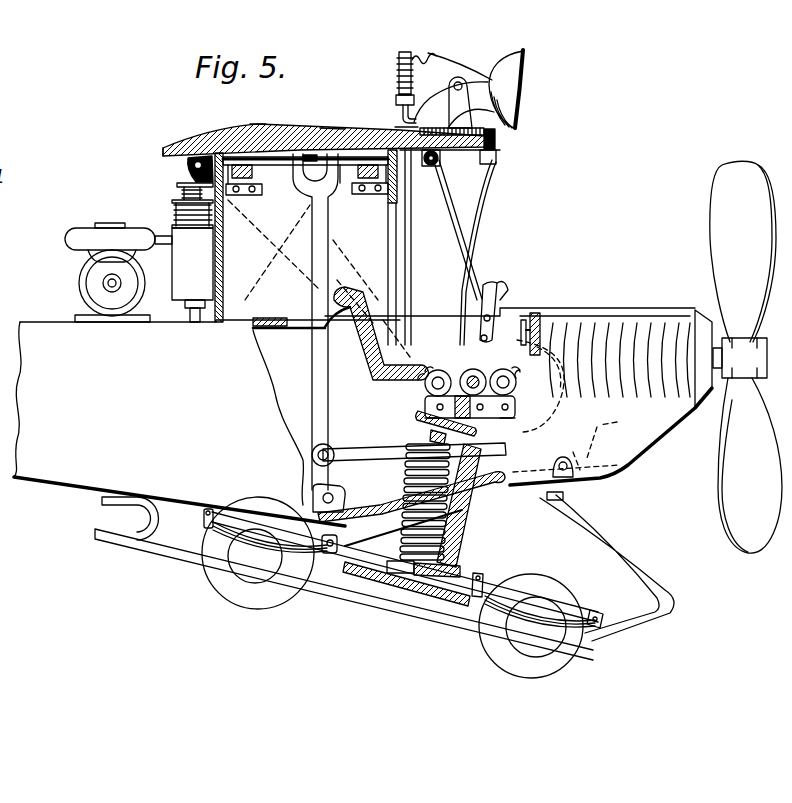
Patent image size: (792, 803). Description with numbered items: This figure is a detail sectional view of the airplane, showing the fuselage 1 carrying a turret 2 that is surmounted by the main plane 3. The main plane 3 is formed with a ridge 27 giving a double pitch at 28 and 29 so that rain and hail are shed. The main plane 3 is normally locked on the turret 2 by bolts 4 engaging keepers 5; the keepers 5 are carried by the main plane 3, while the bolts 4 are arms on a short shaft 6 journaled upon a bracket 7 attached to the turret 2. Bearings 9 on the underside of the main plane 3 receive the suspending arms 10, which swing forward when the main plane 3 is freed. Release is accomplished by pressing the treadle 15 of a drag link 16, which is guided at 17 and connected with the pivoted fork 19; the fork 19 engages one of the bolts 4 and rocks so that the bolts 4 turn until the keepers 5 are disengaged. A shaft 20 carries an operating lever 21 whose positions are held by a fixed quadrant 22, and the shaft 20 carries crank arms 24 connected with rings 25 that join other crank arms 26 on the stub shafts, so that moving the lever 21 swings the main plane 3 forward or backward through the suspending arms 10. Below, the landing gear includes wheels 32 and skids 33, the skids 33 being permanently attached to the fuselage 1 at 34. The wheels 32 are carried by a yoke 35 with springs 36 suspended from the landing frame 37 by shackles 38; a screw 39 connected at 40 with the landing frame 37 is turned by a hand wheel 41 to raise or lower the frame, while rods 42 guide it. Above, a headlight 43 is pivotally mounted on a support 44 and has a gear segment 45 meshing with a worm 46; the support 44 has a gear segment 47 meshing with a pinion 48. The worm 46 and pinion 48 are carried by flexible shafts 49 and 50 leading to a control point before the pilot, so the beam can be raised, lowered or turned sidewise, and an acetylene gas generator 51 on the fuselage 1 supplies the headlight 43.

The fuselage 1 is at (56, 333).
The turret 2 is at (398, 258).
The main plane 3 is at (276, 140).
The bolts 4 is at (280, 166).
The keepers 5 is at (250, 195).
The short shaft 6 is at (189, 167).
The bracket 7 is at (350, 186).
The bearings 9 is at (185, 182).
The suspending arms 10 is at (505, 183).
The treadle 15 is at (603, 432).
The drag link 16 is at (332, 447).
The guide 17 is at (590, 480).
The pivoted fork 19 is at (322, 248).
The shaft 20 is at (448, 375).
The operating lever 21 is at (495, 292).
The fixed quadrant 22 is at (475, 348).
The crank arms 24 is at (525, 380).
The rings 25 is at (488, 418).
The crank arms 26 is at (440, 400).
The ridge 27 is at (262, 120).
The pitch 28 is at (204, 140).
The pitch 29 is at (336, 129).
The wheels 32 is at (222, 580).
The skids 33 is at (610, 640).
The skid attachment 34 is at (102, 503).
The yoke 35 is at (470, 625).
The springs 36 is at (572, 645).
The landing frame 37 is at (372, 562).
The shackles 38 is at (203, 516).
The screw 39 is at (392, 531).
The screw connection 40 is at (452, 566).
The hand wheel 41 is at (420, 428).
The rods 42 is at (370, 487).
The headlight 43 is at (515, 70).
The support 44 is at (463, 105).
The gear segment 45 is at (438, 52).
The worm 46 is at (399, 56).
The gear segment 47 is at (478, 120).
The pinion 48 is at (498, 140).
The flexible shaft 49 is at (411, 288).
The flexible shaft 50 is at (486, 222).
The gas generator 51 is at (190, 252).